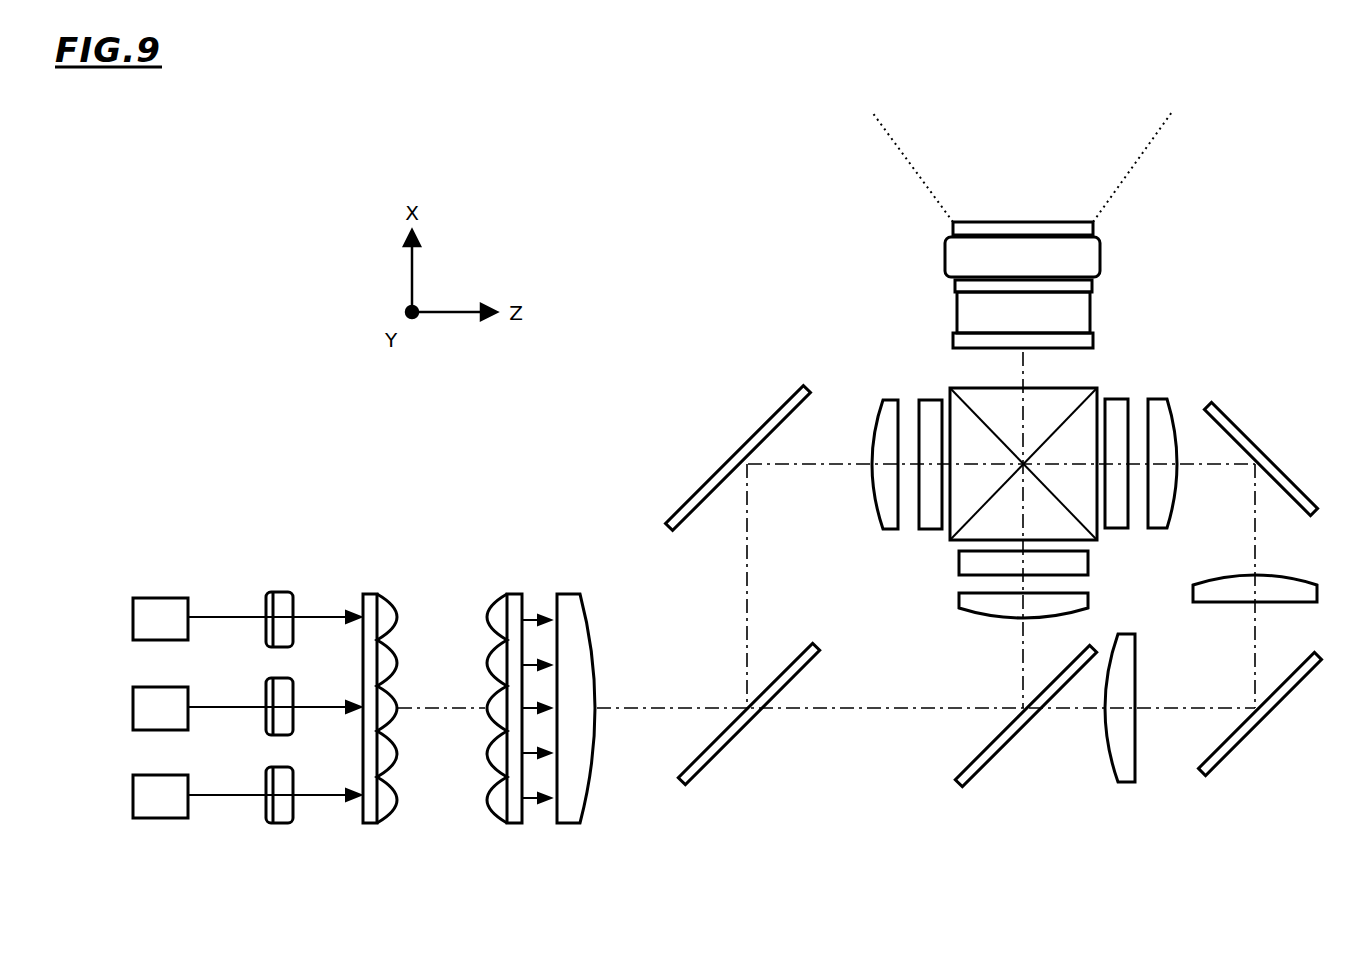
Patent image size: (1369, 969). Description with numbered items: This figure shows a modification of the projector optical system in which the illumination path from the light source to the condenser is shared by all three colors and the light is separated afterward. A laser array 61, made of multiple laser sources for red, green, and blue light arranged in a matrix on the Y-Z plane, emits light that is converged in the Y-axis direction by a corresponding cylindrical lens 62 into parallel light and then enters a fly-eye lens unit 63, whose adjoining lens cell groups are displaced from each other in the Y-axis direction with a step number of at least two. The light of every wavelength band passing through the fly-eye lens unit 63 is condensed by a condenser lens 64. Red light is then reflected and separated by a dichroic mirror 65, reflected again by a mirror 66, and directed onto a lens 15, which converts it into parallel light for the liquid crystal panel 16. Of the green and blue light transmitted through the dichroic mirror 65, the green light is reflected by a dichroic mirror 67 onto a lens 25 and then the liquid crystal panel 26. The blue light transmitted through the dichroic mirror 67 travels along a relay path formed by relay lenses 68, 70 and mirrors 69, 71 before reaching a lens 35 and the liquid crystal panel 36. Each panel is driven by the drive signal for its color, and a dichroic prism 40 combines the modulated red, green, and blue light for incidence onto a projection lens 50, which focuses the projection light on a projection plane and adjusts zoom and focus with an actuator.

The lens 15 is at (885, 500).
The liquid crystal panel 16 is at (935, 530).
The lens 25 is at (970, 610).
The liquid crystal panel 26 is at (1095, 568).
The lens 35 is at (1160, 398).
The liquid crystal panel 36 is at (1115, 392).
The dichroic prism 40 is at (975, 395).
The projection lens 50 is at (1080, 268).
The laser array 61 is at (115, 602).
The cylindrical lens 62 is at (228, 840).
The fly-eye lens unit 63 is at (360, 557).
The condenser lens 64 is at (592, 636).
The dichroic mirror 65 is at (720, 755).
The mirror 66 is at (745, 440).
The dichroic mirror 67 is at (1000, 748).
The relay lens 68 is at (1128, 758).
The mirror 69 is at (1235, 745).
The relay lens 70 is at (1228, 595).
The mirror 71 is at (1277, 460).